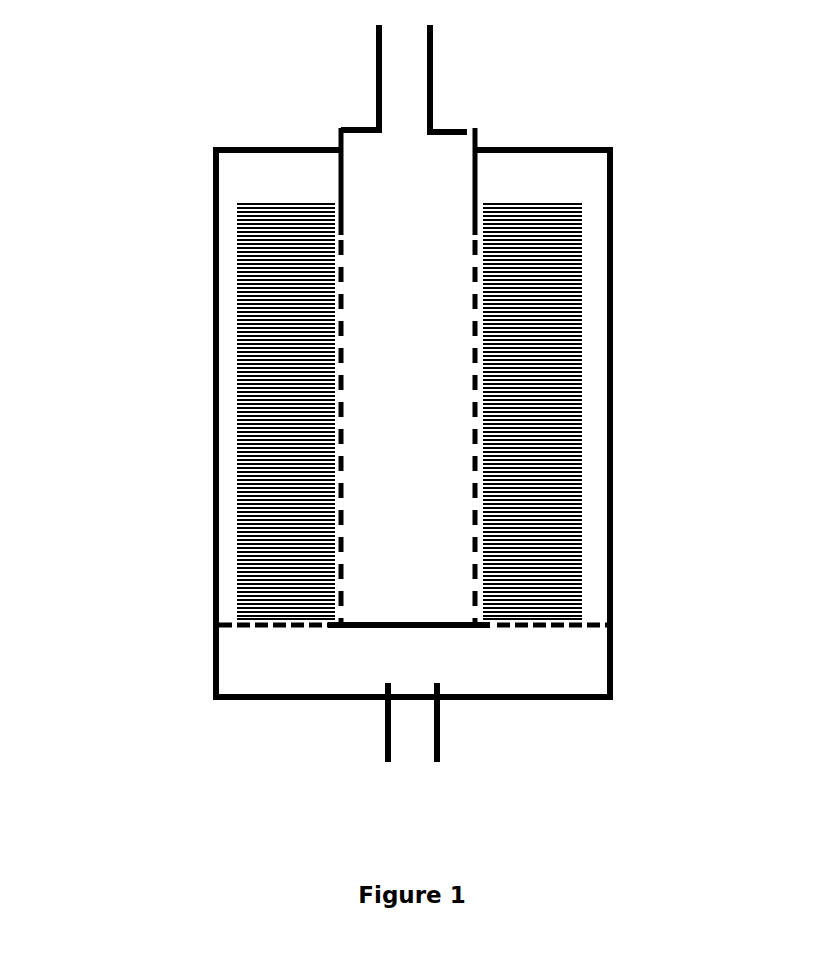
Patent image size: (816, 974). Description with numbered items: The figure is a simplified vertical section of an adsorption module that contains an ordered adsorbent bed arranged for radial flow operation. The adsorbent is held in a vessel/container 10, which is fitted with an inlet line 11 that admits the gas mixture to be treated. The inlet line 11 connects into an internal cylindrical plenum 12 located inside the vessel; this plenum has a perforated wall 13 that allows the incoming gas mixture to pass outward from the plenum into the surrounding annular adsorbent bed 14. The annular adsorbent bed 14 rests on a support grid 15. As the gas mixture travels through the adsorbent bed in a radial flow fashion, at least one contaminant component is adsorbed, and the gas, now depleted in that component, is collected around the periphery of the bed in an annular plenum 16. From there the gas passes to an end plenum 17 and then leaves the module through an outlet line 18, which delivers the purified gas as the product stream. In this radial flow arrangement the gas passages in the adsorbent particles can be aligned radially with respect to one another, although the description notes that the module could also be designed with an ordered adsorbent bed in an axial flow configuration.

The vessel/container 10 is at (195, 153).
The inlet line 11 is at (455, 78).
The internal cylindrical plenum 12 is at (457, 148).
The perforated wall 13 is at (277, 625).
The annular adsorbent bed 14 is at (238, 397).
The support grid 15 is at (548, 625).
The annular plenum 16 is at (592, 483).
The end plenum 17 is at (322, 660).
The outlet line 18 is at (457, 732).